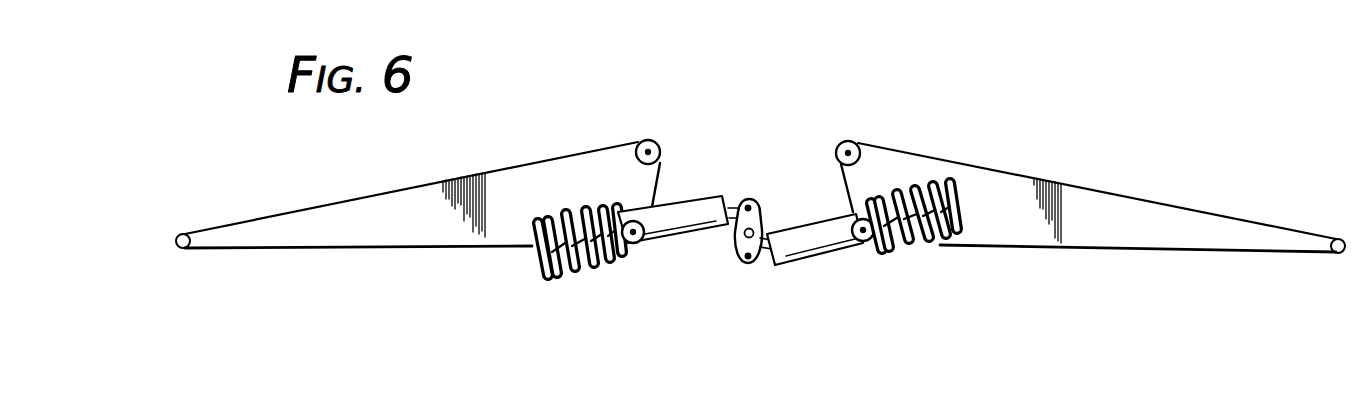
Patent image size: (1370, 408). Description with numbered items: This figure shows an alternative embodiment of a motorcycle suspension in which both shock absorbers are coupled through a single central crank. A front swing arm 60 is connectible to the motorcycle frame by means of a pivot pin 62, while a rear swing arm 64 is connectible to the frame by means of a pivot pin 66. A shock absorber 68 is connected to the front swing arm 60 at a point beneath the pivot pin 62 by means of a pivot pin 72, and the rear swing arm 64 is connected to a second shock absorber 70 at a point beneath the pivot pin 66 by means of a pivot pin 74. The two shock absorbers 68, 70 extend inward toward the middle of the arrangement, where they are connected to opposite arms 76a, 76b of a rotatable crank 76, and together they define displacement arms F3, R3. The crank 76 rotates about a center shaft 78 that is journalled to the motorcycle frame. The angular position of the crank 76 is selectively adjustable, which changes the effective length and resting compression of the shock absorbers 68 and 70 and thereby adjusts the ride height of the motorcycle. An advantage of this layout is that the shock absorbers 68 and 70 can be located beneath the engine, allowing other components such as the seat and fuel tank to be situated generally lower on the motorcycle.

The front swing arm 60 is at (430, 196).
The pivot pin 62 is at (650, 140).
The rear swing arm 64 is at (1079, 200).
The pivot pin 66 is at (858, 143).
The shock absorber 68 is at (663, 250).
The shock absorber 70 is at (835, 270).
The pivot pin 72 is at (608, 262).
The pivot pin 74 is at (868, 243).
The rotatable crank 76 is at (747, 229).
The arm of crank 76a is at (753, 201).
The arm of crank 76b is at (727, 252).
The center shaft 78 is at (757, 222).
The displacement arm F3 is at (687, 259).
The displacement arm R3 is at (878, 282).